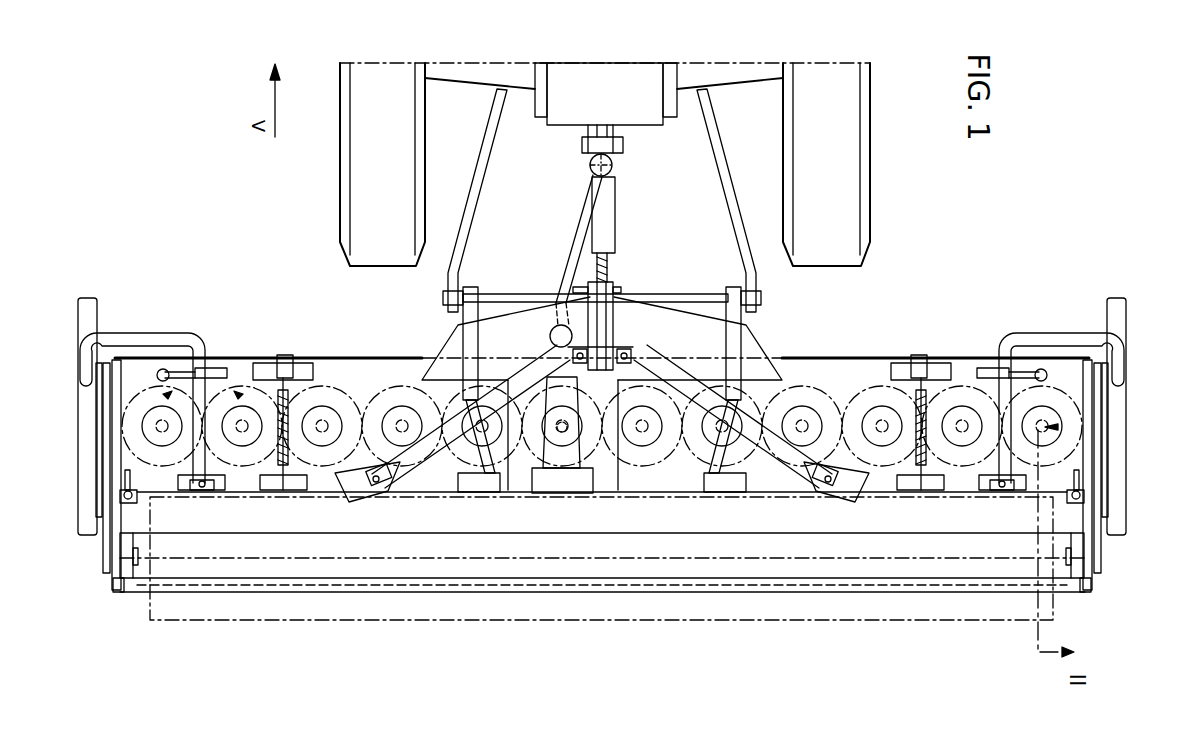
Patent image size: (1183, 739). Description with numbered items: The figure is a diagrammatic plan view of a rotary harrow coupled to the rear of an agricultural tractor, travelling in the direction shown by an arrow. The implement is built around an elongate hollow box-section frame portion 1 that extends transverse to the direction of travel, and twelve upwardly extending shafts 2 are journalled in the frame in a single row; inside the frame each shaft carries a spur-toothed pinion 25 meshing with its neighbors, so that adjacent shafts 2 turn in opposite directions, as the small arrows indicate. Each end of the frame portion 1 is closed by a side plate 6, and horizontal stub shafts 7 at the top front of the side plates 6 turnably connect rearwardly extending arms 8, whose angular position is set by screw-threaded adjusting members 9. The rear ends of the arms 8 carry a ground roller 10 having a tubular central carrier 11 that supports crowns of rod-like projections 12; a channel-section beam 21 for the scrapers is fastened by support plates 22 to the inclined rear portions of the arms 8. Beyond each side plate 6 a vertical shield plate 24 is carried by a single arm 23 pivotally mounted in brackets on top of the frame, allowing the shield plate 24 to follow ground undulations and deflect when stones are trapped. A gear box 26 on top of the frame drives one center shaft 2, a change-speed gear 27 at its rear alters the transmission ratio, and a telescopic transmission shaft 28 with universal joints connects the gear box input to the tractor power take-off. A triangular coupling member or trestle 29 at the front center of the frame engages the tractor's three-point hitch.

The hollow box-section frame portion 1 is at (852, 357).
The upwardly extending shaft 2 is at (870, 420).
The side plate 6 is at (112, 452).
The stub shaft 7 is at (103, 388).
The arm 8 is at (113, 430).
The adjusting member 9 is at (120, 497).
The ground roller 10 is at (386, 621).
The central cylindrical carrier 11 is at (399, 545).
The elongate projection 12 is at (297, 559).
The beam 21 is at (852, 592).
The support plate 22 is at (113, 580).
The arm 23 is at (165, 333).
The shield plate 24 is at (90, 298).
The pinion 25 is at (392, 396).
The gear box 26 is at (610, 457).
The change-speed gear 27 is at (580, 493).
The telescopic transmission shaft 28 is at (575, 241).
The coupling member or trestle 29 is at (659, 318).